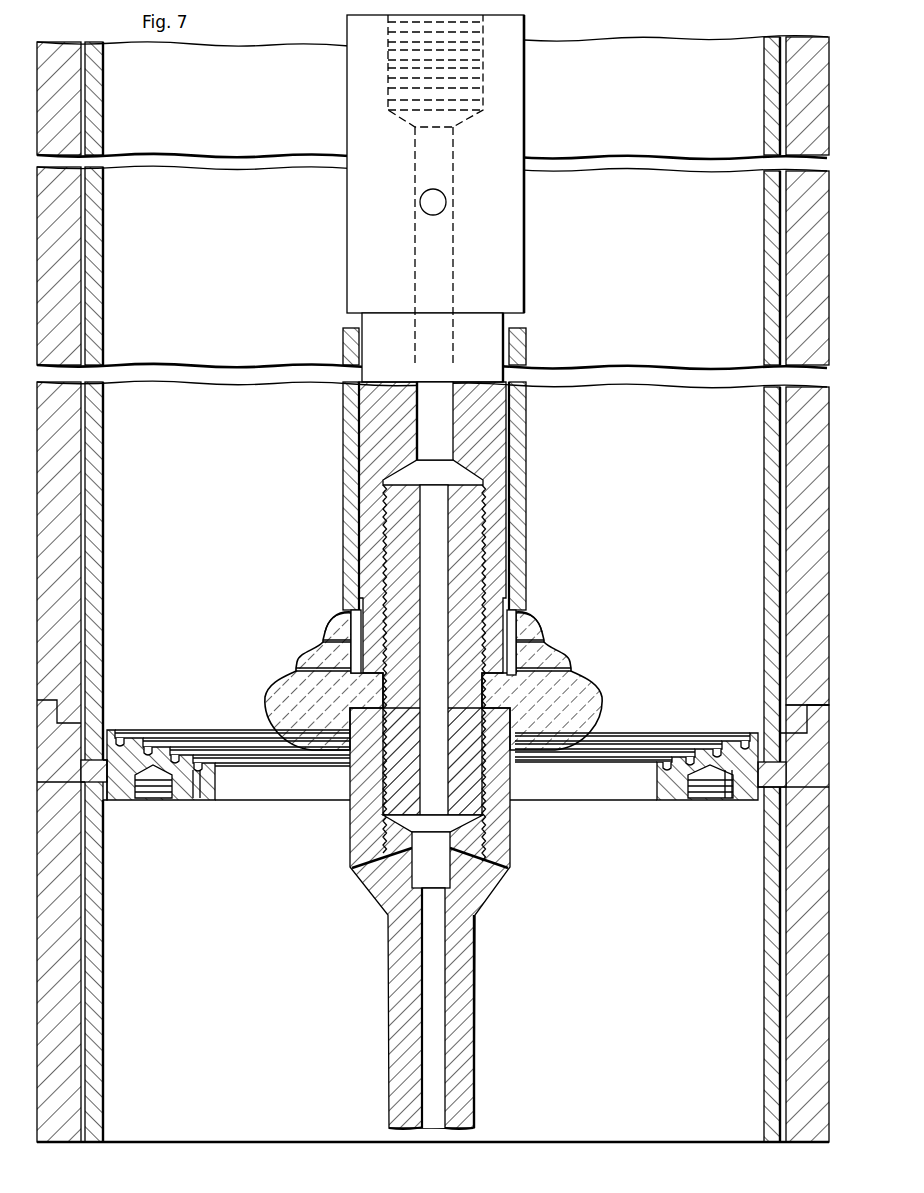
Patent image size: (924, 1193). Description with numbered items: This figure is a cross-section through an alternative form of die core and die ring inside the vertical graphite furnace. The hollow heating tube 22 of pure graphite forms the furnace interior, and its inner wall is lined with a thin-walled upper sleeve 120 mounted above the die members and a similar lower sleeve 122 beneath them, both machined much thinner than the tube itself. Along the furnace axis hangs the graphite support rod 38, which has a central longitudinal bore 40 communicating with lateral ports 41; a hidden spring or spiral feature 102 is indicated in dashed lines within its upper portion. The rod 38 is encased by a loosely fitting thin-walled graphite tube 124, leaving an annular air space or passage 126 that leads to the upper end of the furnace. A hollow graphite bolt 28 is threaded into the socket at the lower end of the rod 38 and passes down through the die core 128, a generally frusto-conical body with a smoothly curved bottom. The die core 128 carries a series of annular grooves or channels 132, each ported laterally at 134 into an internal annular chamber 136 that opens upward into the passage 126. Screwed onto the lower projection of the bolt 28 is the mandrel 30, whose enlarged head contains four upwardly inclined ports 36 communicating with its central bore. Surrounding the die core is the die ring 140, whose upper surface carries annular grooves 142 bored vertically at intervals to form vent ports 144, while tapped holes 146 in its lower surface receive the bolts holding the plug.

The heating tube 22 is at (95, 616).
The hollow graphite bolt 28 is at (465, 558).
The mandrel 30 is at (476, 945).
The upwardly inclined ports 36 is at (508, 880).
The graphite rod 38 is at (516, 265).
The central longitudinal bore 40 is at (446, 420).
The lateral ports 41 is at (446, 205).
The hidden spring 102 is at (482, 95).
The upper sleeve 120 is at (770, 544).
The lower sleeve 122 is at (768, 929).
The thin-walled graphite tube 124 is at (527, 343).
The annular air space or passage 126 is at (512, 436).
The die core 128 is at (603, 672).
The annular grooves or channels 132 is at (543, 636).
The lateral ports 134 is at (550, 660).
The internal chamber 136 is at (348, 620).
The die ring 140 is at (165, 729).
The annular grooves 142 is at (198, 757).
The vent ports 144 is at (205, 800).
The tapped holes 146 is at (164, 800).